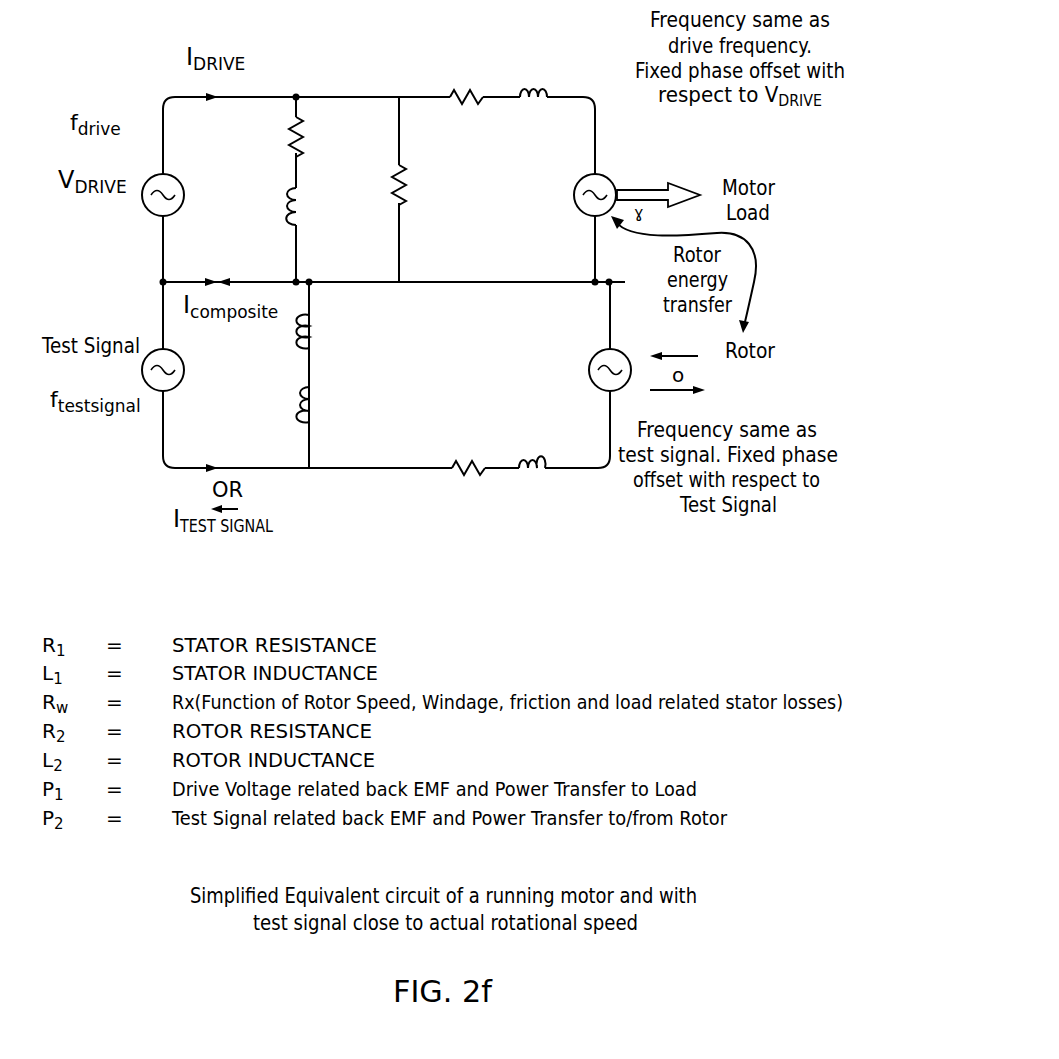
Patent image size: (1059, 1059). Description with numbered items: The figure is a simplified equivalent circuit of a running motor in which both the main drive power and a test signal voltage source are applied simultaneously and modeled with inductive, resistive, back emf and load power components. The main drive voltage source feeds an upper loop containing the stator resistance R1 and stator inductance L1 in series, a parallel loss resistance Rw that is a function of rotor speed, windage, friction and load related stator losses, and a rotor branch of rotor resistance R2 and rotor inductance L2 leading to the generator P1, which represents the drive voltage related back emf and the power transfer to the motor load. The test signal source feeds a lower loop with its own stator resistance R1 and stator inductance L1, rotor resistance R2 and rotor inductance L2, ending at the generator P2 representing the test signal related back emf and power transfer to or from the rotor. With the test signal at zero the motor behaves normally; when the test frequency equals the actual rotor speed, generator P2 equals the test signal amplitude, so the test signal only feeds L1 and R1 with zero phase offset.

The stator resistance R1 is at (322, 234).
The stator inductance L1 is at (319, 306).
The windage, friction and load related stator loss resistance Rw is at (420, 185).
The rotor resistance R2 is at (469, 286).
The rotor inductance L2 is at (534, 286).
The drive voltage related back EMF generator P1 is at (637, 173).
The test signal related back EMF generator P2 is at (647, 357).